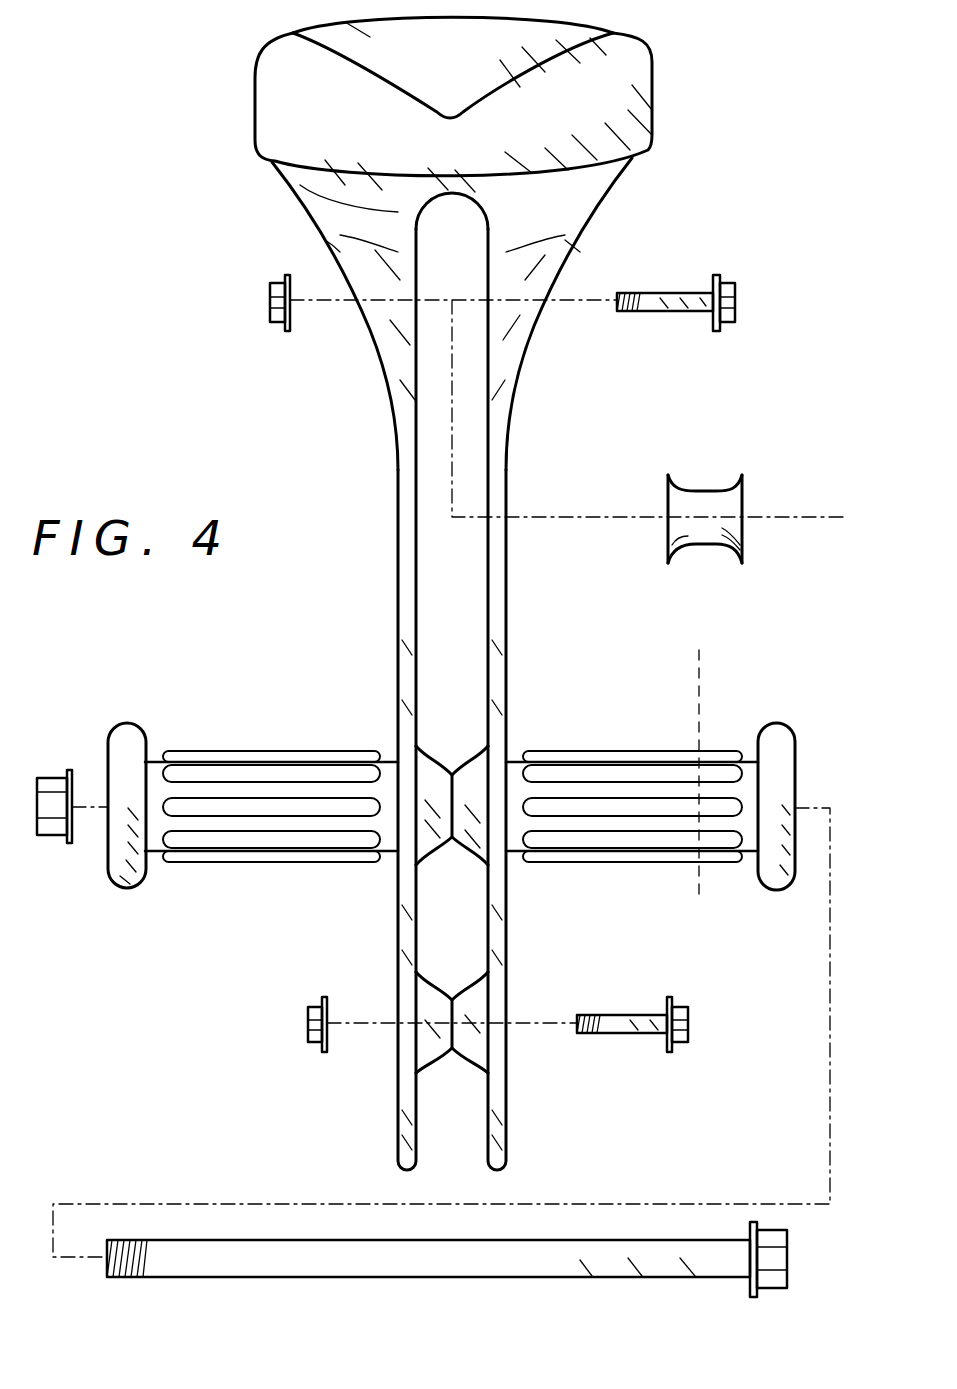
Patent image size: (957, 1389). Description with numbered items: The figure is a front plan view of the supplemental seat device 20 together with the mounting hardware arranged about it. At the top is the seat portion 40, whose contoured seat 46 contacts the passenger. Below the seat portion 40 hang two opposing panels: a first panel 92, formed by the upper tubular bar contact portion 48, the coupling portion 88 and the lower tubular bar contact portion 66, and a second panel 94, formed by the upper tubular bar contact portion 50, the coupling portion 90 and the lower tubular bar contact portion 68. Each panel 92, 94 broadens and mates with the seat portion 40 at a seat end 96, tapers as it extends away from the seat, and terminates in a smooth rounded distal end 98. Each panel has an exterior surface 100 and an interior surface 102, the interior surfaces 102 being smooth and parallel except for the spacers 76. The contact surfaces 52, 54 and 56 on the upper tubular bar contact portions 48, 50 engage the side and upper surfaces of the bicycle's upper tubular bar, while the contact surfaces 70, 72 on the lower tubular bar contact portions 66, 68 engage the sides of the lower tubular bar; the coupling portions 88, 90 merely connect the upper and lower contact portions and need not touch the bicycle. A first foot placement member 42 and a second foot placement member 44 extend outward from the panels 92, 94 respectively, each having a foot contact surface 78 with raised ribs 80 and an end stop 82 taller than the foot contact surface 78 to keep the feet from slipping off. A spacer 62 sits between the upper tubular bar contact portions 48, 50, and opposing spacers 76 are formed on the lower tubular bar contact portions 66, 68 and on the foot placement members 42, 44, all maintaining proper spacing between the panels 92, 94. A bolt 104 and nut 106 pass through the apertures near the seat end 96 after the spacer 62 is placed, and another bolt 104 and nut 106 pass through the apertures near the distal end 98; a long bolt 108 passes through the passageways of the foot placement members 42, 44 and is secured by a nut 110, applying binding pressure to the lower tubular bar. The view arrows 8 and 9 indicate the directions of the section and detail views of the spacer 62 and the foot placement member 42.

The supplemental seat device 20 is at (737, 31).
The seat portion 40 is at (635, 88).
The seat 46 is at (348, 28).
The seat end 96 is at (277, 175).
The contact surface 56 is at (418, 210).
The contact surface 52 is at (418, 232).
The upper tubular bar contact portion 50 is at (335, 243).
The contact surface 54 is at (486, 234).
The upper tubular bar contact portion 48 is at (568, 248).
The second panel 94 is at (392, 416).
The first panel 92 is at (512, 418).
The coupling portion 90 is at (396, 510).
The coupling portion 88 is at (508, 546).
The exterior surface 100 is at (508, 480).
The interior surface 102 is at (417, 560).
The spacer 62 is at (710, 488).
The view direction arrow 8 is at (807, 553).
The section line 9 is at (730, 687).
The spacer 76 is at (428, 745).
The foot contact surface 78 is at (238, 752).
The raised ribs 80 is at (294, 752).
The end stop 82 is at (128, 888).
The first foot placement member 42 is at (746, 755).
The second foot placement member 44 is at (155, 853).
The contact surface 72 is at (418, 890).
The contact surface 70 is at (486, 890).
The lower tubular bar contact portion 68 is at (396, 965).
The lower tubular bar contact portion 66 is at (508, 955).
The distal end 98 is at (397, 1085).
The bolt 104 is at (690, 312).
The nut 106 is at (272, 320).
The nut 110 is at (52, 843).
The bolt 108 is at (472, 1278).